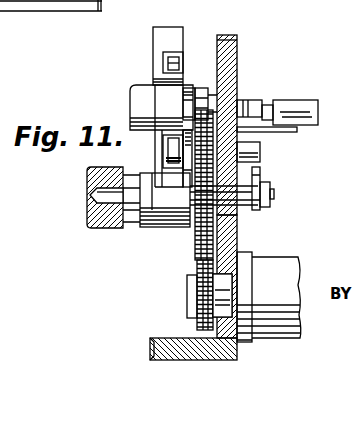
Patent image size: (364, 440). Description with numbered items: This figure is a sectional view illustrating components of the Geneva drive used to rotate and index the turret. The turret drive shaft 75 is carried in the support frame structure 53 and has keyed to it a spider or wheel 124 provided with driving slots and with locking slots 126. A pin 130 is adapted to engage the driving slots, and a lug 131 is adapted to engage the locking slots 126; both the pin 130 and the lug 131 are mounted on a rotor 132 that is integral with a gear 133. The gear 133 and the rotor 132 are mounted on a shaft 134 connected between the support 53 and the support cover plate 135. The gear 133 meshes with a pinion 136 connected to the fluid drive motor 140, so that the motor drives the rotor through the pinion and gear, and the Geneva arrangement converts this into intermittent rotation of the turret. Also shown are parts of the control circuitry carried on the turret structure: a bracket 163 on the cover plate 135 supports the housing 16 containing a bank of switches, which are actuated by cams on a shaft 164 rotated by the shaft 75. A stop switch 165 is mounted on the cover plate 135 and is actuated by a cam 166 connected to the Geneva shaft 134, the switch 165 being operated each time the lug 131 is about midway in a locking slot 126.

The spider or wheel 124 is at (152, 35).
The turret drive shaft 75 is at (137, 85).
The pin 130 is at (163, 141).
The locking slots 126 is at (152, 172).
The frame structure 53 is at (88, 174).
The shaft 134 is at (130, 225).
The lug 131 is at (150, 228).
The rotor 132 is at (187, 247).
The pinion 136 is at (193, 323).
The support cover plate 135 is at (237, 48).
The gear 133 is at (237, 234).
The shaft 164 is at (262, 107).
The motor housing 16 is at (320, 103).
The bracket 163 is at (273, 132).
The stop switch 165 is at (260, 158).
The cam 166 is at (258, 214).
The fluid drive motor 140 is at (292, 262).